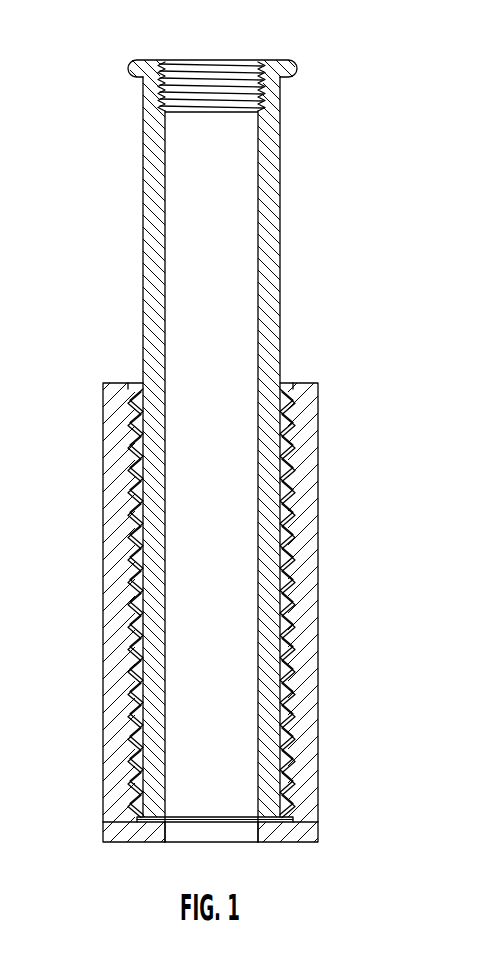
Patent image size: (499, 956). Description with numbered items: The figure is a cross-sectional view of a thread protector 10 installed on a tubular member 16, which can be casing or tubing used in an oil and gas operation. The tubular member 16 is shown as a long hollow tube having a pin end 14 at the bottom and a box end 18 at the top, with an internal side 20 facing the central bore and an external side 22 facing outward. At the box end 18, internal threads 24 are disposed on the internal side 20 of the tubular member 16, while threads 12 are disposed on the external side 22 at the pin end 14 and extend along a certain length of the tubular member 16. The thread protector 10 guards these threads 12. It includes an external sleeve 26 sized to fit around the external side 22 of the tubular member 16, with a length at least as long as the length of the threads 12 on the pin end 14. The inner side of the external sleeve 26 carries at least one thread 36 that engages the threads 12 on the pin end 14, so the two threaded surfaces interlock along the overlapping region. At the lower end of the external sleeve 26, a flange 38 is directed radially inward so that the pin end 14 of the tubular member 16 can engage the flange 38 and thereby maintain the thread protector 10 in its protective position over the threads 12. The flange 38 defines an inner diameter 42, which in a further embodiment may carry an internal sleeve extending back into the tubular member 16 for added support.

The thread protector 10 is at (370, 622).
The threads 12 is at (293, 498).
The pin end 14 is at (268, 822).
The tubular member 16 is at (280, 252).
The box end 18 is at (282, 60).
The internal side 20 is at (162, 157).
The external side 22 is at (143, 303).
The internal threads 24 is at (251, 96).
The external sleeve 26 is at (318, 558).
The thread 36 is at (290, 775).
The flange 38 is at (148, 828).
The inner diameter 42 is at (238, 843).